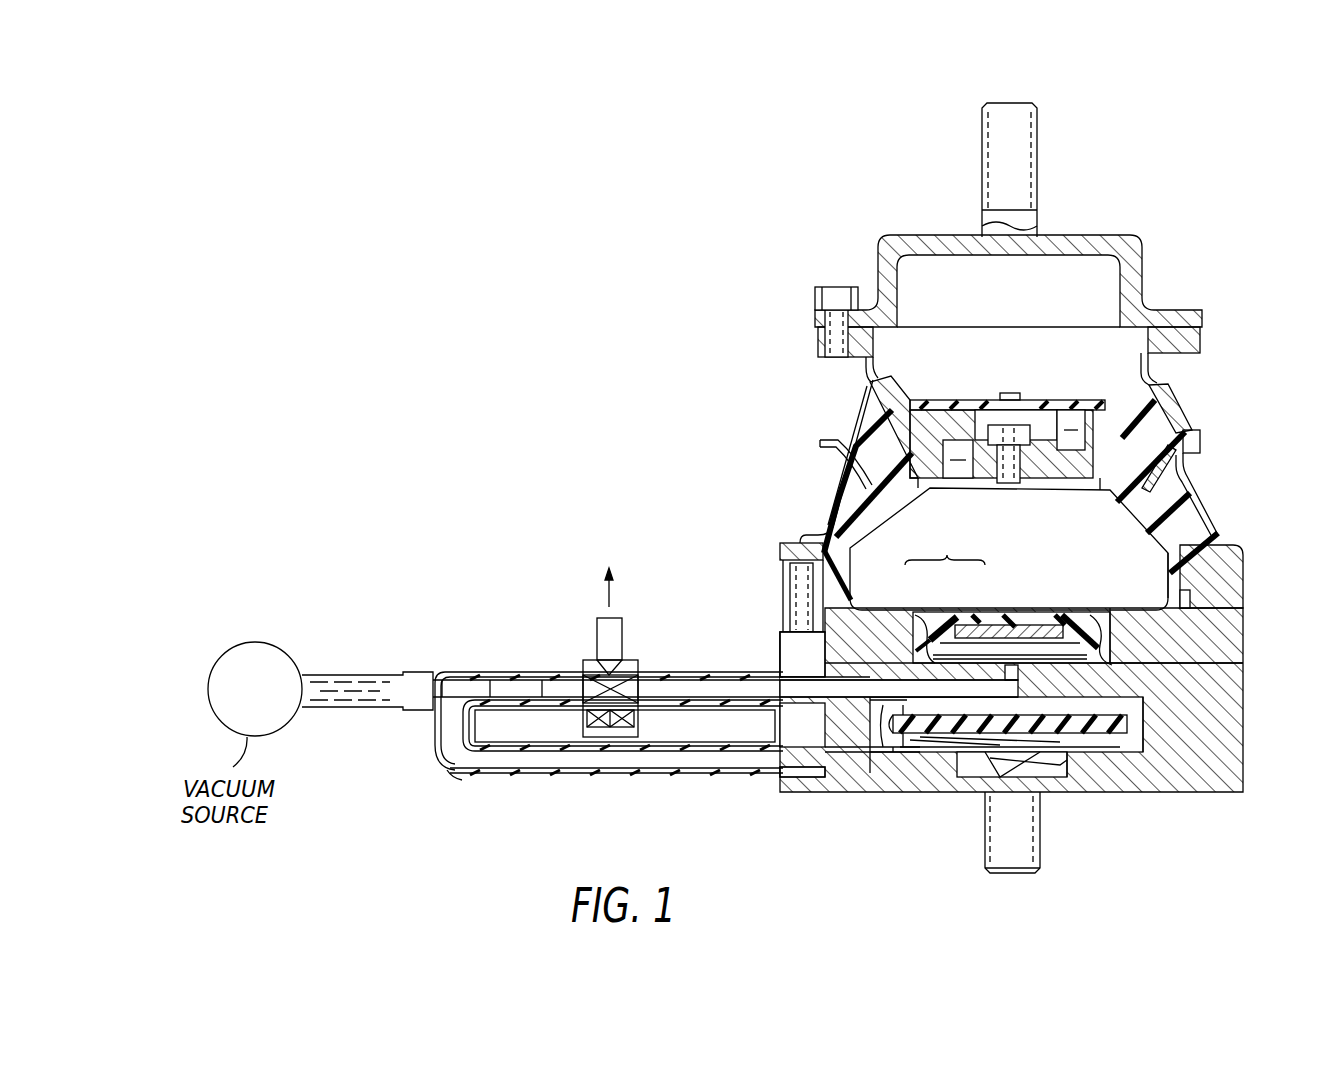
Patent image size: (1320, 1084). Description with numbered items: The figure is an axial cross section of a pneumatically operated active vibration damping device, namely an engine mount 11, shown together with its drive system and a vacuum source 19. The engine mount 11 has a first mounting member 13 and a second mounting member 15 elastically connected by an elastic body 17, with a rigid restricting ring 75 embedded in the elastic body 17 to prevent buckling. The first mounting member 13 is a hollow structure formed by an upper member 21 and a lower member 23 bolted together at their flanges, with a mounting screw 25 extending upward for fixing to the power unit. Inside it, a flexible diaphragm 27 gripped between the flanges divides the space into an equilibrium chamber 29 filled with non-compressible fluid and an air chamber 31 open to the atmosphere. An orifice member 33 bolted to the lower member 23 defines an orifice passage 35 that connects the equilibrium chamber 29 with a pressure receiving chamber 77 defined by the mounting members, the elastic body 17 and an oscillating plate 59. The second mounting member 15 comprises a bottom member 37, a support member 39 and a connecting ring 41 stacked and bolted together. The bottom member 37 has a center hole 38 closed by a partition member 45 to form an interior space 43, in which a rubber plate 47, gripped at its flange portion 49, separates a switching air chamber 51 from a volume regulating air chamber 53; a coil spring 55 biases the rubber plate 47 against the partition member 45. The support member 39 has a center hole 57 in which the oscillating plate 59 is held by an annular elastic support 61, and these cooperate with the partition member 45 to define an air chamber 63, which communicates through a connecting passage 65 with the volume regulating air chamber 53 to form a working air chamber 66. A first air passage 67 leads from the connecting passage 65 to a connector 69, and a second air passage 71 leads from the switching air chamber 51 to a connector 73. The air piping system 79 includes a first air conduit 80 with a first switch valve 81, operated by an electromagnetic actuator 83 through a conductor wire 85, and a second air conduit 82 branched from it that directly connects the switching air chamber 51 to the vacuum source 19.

The engine mount 11 is at (880, 195).
The first mounting member 13 is at (1085, 225).
The second mounting member 15 is at (772, 560).
The elastic body 17 is at (1173, 482).
The vacuum source 19 is at (280, 655).
The upper member 21 is at (1140, 272).
The lower member 23 is at (1127, 385).
The mounting screw 25 is at (1030, 148).
The flexible diaphragm 27 is at (932, 397).
The equilibrium chamber 29 is at (1030, 412).
The air chamber 31 is at (928, 268).
The orifice member 33 is at (963, 413).
The orifice passage 35 is at (1045, 480).
The bottom member 37 is at (1210, 792).
The center hole 38 is at (1115, 792).
The support member 39 is at (1232, 650).
The connecting ring 41 is at (1235, 563).
The interior space 43 is at (1078, 790).
The partition member 45 is at (1175, 788).
The rubber plate 47 is at (900, 790).
The flange portion 49 is at (848, 780).
The switching air chamber 51 is at (930, 790).
The volume regulating air chamber 53 is at (923, 707).
The coil spring 55 is at (975, 790).
The center hole 57 is at (927, 650).
The oscillating plate 59 is at (1025, 623).
The elastic support 61 is at (1087, 623).
The air chamber 63 is at (965, 660).
The connecting passage 65 is at (1013, 670).
The working air chamber 66 is at (945, 548).
The first air passage 67 is at (835, 655).
The connector 69 is at (808, 707).
The second air passage 71 is at (875, 792).
The connector 73 is at (808, 780).
The restricting ring 75 is at (843, 478).
The pressure receiving chamber 77 is at (1150, 550).
The air piping system 79 is at (527, 790).
The first air conduit 80 is at (468, 662).
The first switch valve 81 is at (587, 664).
The second air conduit 82 is at (447, 770).
The electromagnetic actuator 83 is at (640, 717).
The conductor wire 85 is at (567, 720).